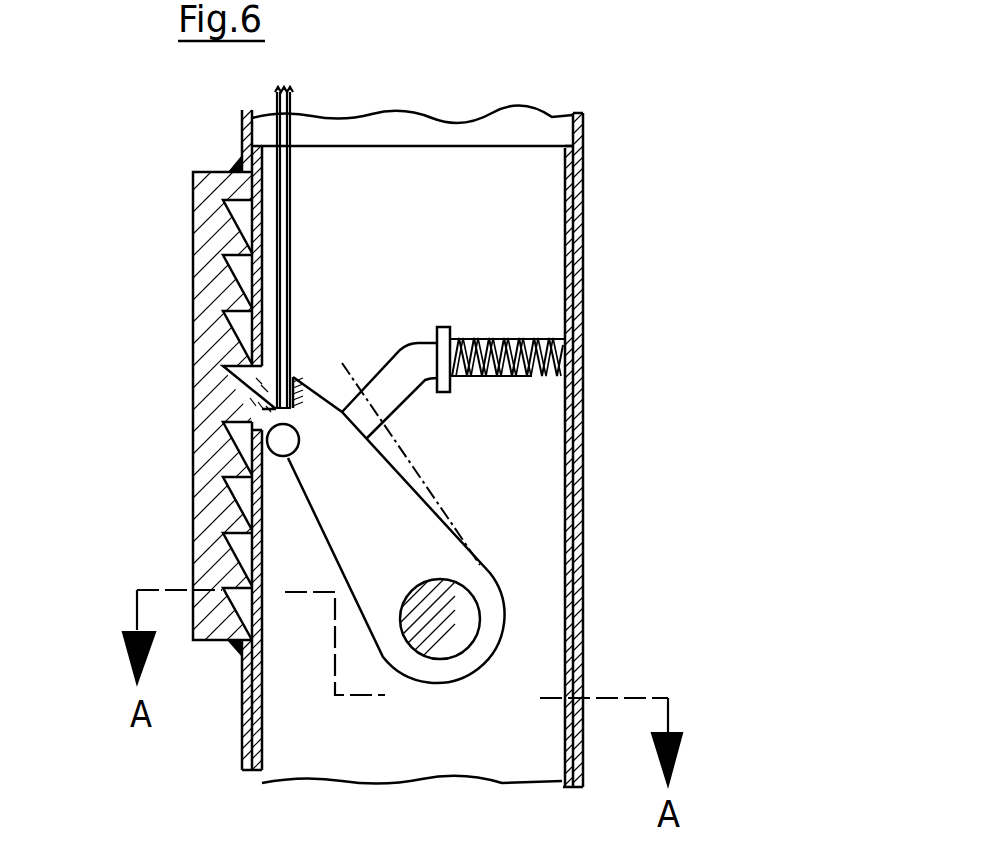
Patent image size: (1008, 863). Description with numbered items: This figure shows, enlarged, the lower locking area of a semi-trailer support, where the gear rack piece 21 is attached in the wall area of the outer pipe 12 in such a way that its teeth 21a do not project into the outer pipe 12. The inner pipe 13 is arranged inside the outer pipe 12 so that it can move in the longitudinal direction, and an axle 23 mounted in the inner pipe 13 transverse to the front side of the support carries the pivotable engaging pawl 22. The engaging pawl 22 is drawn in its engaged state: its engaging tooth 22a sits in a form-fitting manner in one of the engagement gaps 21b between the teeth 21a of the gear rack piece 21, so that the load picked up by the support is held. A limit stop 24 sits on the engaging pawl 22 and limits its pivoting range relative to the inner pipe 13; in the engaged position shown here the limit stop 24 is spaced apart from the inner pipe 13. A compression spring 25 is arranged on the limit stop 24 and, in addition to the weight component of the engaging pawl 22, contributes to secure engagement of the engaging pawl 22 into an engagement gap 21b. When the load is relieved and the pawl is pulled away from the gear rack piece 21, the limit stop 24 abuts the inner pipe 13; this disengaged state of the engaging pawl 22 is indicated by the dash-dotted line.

The outer pipe 12 is at (578, 542).
The inner pipe 13 is at (566, 597).
The gear rack piece 21 is at (166, 229).
The teeth 21a is at (238, 293).
The engagement gaps 21b is at (340, 360).
The engaging pawl 22 is at (380, 512).
The engaging tooth 22a is at (258, 387).
The axle 23 is at (460, 625).
The limit stop 24 is at (517, 360).
The compression spring 25 is at (508, 332).